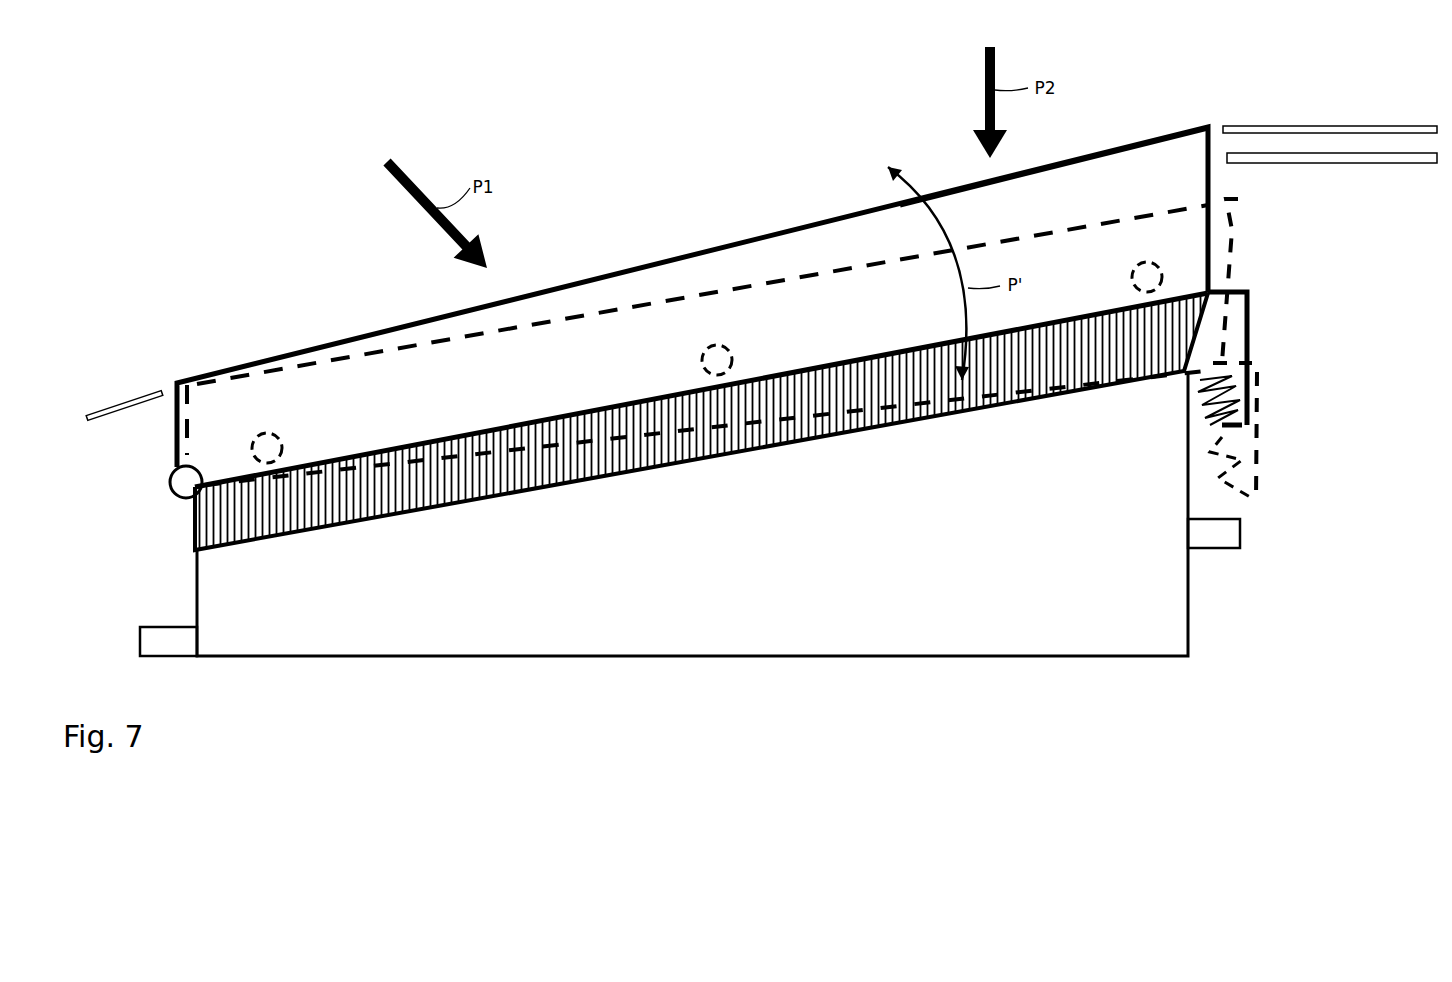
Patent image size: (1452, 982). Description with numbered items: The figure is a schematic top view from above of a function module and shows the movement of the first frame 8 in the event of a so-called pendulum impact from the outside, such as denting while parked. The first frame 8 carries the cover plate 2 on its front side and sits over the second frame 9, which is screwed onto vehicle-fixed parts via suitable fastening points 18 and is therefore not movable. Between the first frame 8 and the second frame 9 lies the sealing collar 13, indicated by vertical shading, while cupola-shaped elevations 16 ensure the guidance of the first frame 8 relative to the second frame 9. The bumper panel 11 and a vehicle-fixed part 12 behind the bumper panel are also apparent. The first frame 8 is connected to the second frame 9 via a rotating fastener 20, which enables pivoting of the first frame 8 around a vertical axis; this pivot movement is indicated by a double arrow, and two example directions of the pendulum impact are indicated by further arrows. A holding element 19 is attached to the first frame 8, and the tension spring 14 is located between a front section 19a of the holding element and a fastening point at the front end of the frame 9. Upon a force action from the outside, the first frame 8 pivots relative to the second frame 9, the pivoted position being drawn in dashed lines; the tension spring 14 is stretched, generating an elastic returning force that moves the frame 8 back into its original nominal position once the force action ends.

The cover plate 2 is at (686, 255).
The first frame 8 is at (1110, 178).
The second frame 9 is at (935, 630).
The bumper panel 11 is at (125, 402).
The vehicle-fixed part 12 is at (1352, 166).
The sealing collar 13 is at (560, 418).
The tension spring 14 is at (1238, 408).
The cupola-shaped elevations 16 is at (283, 447).
The fastening points 18 is at (172, 648).
The holding element 19 is at (1250, 323).
The front section of the holding element 19a is at (1240, 427).
The rotating fastener 20 is at (176, 498).